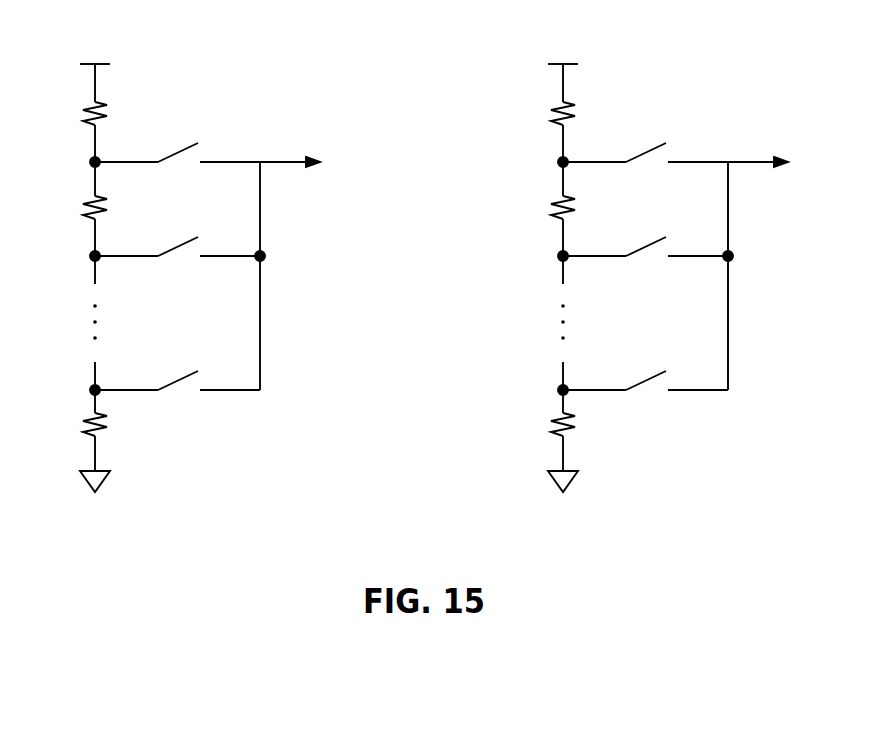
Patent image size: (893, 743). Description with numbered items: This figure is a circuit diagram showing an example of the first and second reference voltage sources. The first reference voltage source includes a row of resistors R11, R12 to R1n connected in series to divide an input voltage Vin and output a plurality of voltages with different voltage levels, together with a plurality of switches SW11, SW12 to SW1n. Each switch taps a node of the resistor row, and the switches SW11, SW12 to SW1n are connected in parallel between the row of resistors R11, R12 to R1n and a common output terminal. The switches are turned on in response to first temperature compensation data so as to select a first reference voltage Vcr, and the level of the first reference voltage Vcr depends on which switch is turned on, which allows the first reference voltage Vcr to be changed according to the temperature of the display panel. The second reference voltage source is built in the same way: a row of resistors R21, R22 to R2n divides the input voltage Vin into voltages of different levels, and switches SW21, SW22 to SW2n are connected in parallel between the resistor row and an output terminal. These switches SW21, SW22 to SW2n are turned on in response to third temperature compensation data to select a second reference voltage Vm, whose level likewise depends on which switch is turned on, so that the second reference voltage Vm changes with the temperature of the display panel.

The input voltage Vin is at (330, 51).
The resistor R11 is at (74, 116).
The resistor R12 is at (74, 210).
The resistor R1n is at (74, 426).
The switch SW11 is at (200, 168).
The switch SW12 is at (177, 262).
The switch SW1n is at (177, 396).
The first reference voltage Vcr is at (332, 164).
The resistor R21 is at (541, 116).
The resistor R22 is at (541, 210).
The resistor R2n is at (541, 426).
The switch SW21 is at (668, 168).
The switch SW22 is at (645, 262).
The switch SW2n is at (645, 396).
The second reference voltage Vm is at (795, 164).